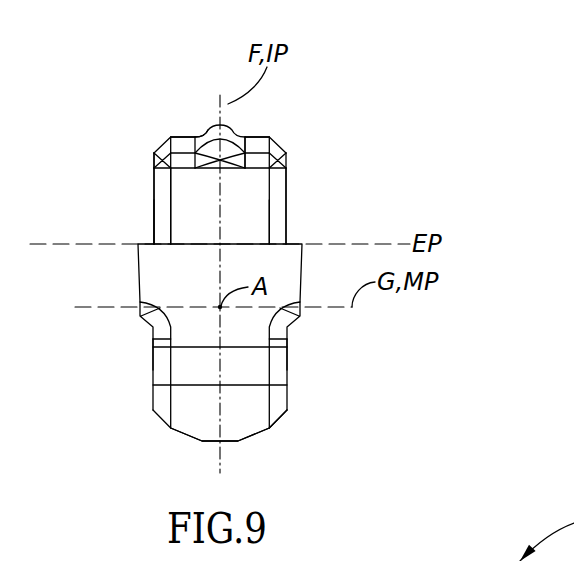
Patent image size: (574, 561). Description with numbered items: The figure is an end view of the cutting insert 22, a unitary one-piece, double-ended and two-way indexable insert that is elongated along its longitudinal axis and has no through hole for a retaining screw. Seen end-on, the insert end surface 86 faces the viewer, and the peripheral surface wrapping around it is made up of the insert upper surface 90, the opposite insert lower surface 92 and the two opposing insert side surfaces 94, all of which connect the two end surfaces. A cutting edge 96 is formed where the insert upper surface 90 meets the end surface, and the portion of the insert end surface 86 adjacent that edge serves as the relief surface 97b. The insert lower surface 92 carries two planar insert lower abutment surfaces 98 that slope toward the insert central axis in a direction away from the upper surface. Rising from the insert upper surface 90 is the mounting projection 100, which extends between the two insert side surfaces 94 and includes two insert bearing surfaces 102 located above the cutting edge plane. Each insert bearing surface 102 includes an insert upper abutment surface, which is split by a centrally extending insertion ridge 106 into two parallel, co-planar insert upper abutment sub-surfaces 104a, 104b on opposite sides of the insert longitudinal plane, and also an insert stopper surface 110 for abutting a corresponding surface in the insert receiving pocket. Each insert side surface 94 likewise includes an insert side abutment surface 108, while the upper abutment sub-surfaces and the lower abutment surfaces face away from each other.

The cutting insert 22 is at (438, 137).
The insert end surface 86 is at (252, 362).
The insert upper surface 90 is at (262, 137).
The insert lower surface 92 is at (273, 427).
The insert side surface 94 is at (153, 196).
The cutting edge 96 is at (192, 243).
The relief surface 97b is at (267, 243).
The insert lower abutment surface 98 is at (253, 433).
The mounting projection 100 is at (165, 115).
The insert bearing surface 102 is at (258, 147).
The insert upper abutment sub-surface 104a is at (248, 195).
The insert upper abutment sub-surface 104b is at (184, 145).
The insertion ridge 106 is at (207, 132).
The insert side abutment surface 108 is at (287, 355).
The insert stopper surface 110 is at (199, 197).